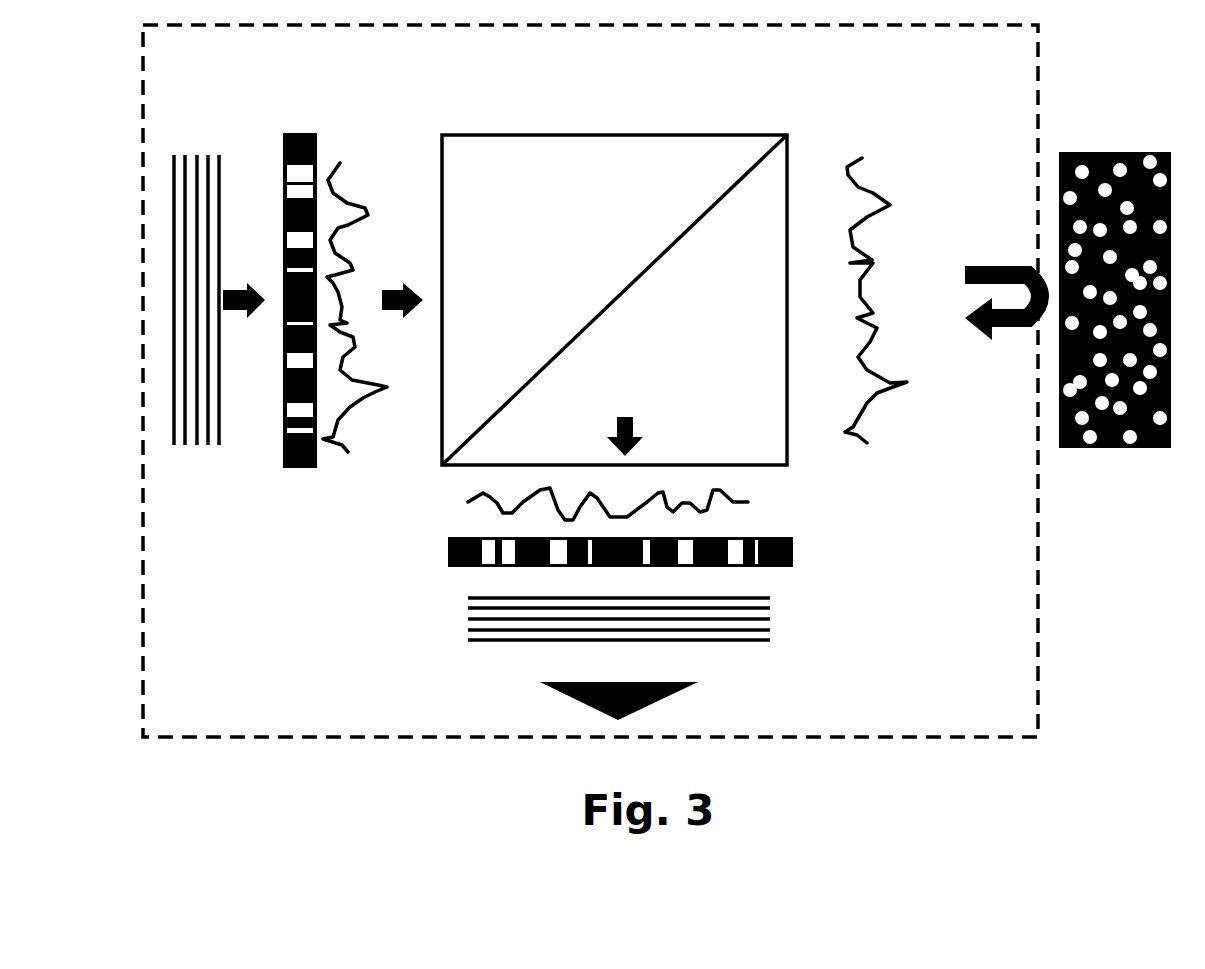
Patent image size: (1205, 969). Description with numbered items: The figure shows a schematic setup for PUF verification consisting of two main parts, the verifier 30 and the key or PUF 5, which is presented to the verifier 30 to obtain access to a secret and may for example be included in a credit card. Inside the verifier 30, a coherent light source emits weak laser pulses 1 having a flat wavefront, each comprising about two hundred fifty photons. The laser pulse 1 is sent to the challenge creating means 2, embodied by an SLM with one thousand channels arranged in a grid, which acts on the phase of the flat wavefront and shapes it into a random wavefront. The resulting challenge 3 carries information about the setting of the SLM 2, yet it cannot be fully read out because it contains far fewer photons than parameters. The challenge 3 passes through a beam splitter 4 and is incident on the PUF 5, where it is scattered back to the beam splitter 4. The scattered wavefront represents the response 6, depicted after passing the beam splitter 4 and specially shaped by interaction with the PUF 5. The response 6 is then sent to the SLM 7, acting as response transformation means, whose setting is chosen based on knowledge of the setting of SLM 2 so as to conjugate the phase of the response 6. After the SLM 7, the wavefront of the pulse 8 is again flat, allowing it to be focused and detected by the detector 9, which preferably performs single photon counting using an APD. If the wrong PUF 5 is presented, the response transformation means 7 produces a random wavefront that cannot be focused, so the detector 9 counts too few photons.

The laser pulses 1 is at (208, 150).
The challenge creating means (SLM) 2 is at (297, 128).
The challenge 3 is at (358, 200).
The beam splitter 4 is at (598, 130).
The PUF 5 is at (1113, 147).
The response 6 is at (752, 500).
The SLM (response transformation means) 7 is at (799, 551).
The pulse 8 is at (774, 624).
The detector 9 is at (687, 697).
The verifier 30 is at (1042, 642).